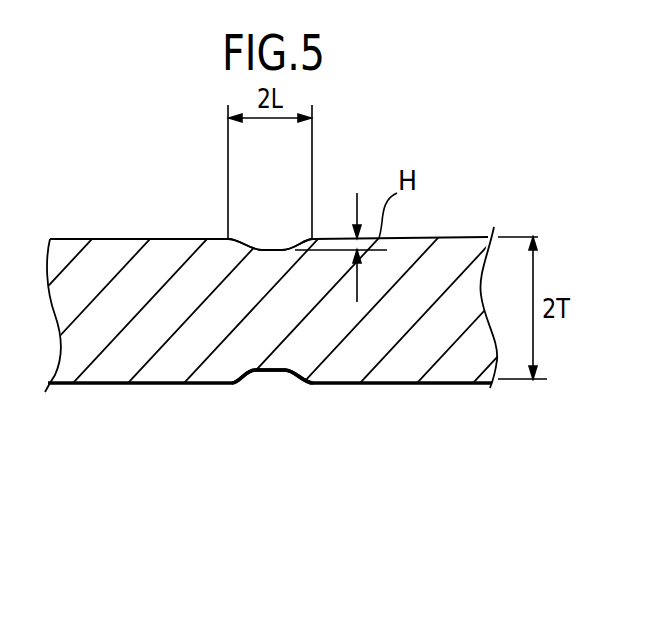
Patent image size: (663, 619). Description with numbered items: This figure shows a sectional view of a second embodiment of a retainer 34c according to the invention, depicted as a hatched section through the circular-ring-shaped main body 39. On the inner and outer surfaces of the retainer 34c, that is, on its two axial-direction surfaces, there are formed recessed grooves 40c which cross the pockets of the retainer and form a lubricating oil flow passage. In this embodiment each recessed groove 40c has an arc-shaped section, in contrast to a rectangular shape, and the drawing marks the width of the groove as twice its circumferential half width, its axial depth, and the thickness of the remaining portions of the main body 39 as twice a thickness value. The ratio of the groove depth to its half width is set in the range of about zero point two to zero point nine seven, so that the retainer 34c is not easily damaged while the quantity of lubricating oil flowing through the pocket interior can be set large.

The main body 39 is at (80, 257).
The recessed groove 40c is at (296, 249).
The retainer 34c is at (118, 360).